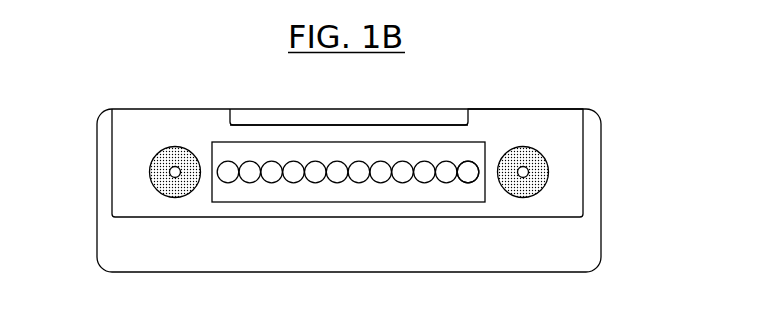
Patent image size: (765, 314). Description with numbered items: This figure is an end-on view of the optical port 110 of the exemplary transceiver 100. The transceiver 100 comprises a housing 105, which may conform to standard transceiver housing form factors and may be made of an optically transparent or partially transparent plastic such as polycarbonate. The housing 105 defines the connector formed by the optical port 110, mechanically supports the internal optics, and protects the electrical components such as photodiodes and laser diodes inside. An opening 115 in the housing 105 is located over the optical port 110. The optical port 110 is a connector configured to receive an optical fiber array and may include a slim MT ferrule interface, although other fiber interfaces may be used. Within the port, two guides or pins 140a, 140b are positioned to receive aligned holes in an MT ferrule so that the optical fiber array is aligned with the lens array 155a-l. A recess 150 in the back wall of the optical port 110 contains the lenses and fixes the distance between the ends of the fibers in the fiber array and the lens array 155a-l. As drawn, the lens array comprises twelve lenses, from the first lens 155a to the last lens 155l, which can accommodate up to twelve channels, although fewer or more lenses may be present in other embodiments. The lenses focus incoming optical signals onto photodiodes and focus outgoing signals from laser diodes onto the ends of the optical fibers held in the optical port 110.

The transceiver 100 is at (473, 93).
The housing 105 is at (595, 109).
The optical port 110 is at (125, 149).
The opening 115 is at (336, 118).
The guide or pin 140a is at (148, 182).
The guide or pin 140b is at (550, 176).
The recess 150 is at (268, 142).
The lens 155a is at (228, 183).
The lens 155l is at (468, 183).